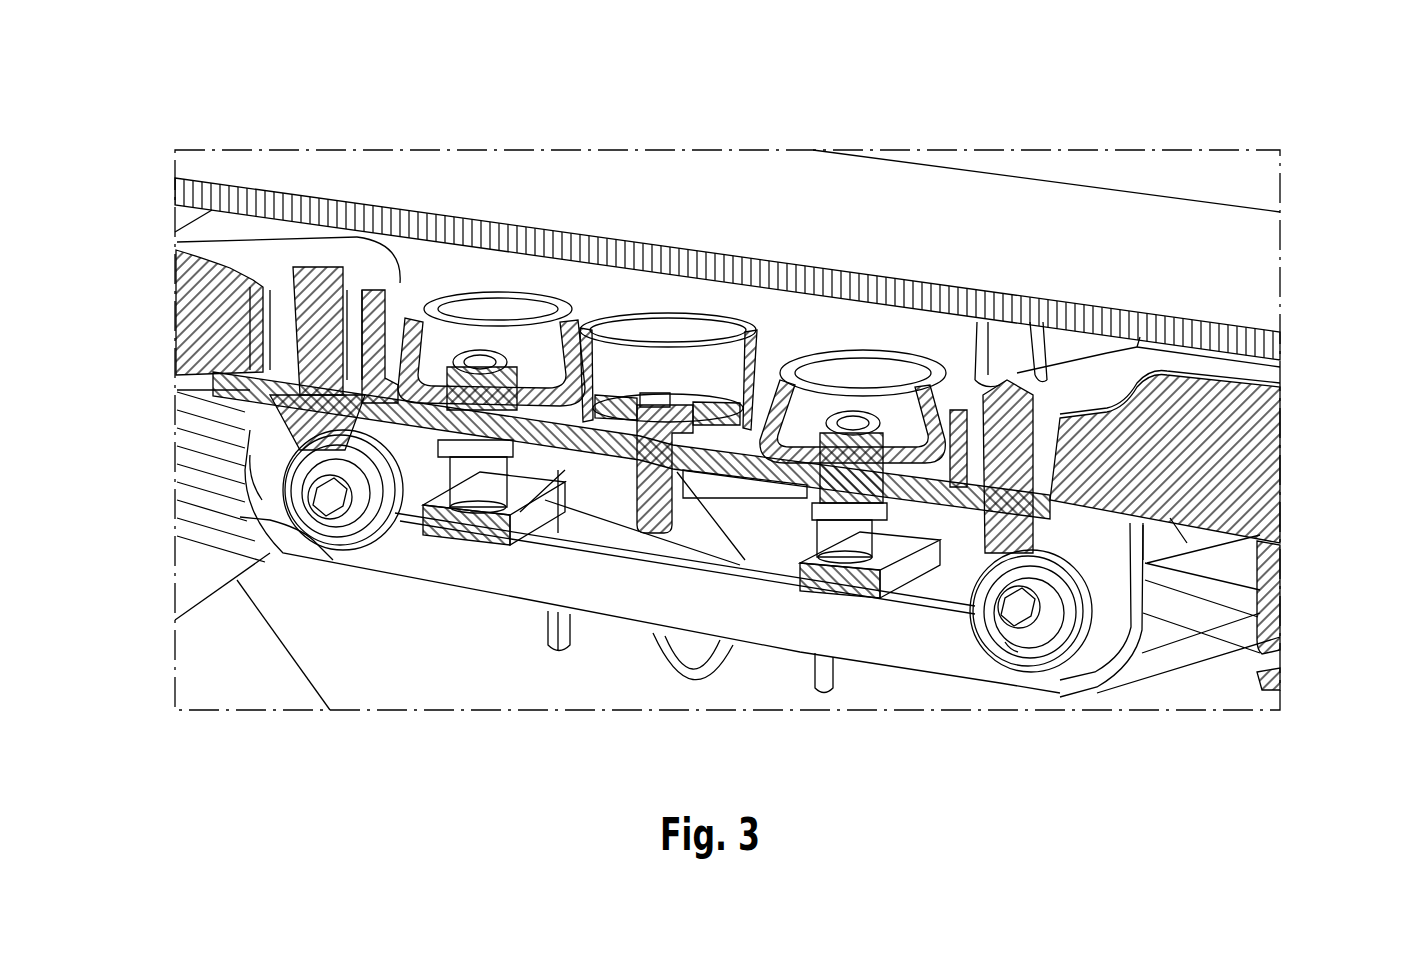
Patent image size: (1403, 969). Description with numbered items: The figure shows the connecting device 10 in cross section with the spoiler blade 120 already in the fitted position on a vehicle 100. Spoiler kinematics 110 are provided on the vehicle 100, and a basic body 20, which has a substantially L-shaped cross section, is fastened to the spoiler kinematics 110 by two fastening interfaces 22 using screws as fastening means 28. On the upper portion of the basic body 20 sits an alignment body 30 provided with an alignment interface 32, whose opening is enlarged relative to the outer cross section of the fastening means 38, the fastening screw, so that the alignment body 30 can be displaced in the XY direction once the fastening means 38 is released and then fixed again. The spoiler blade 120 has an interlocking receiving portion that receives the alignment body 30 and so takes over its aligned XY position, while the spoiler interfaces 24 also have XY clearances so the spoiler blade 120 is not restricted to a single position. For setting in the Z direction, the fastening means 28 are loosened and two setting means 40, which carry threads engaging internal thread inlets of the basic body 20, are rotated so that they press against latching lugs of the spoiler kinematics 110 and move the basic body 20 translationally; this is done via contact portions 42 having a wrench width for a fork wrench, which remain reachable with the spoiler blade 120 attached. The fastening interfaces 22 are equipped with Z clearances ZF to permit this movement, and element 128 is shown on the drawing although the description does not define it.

The vehicle 100 is at (312, 104).
The spoiler kinematics 110 is at (263, 680).
The spoiler blade 120 is at (1228, 233).
The connecting device 10 is at (235, 505).
The basic body 20 is at (255, 500).
The fastening interfaces 22 is at (270, 547).
The spoiler interfaces 24 is at (273, 390).
The fastening means 28 is at (312, 521).
The alignment body 30 is at (607, 333).
The alignment interface 32 is at (713, 433).
The fastening means 38 is at (670, 393).
The setting means 40 is at (507, 373).
The contact portions 42 is at (470, 492).
The cross bar 128 is at (263, 410).
The Z clearance ZF is at (263, 492).